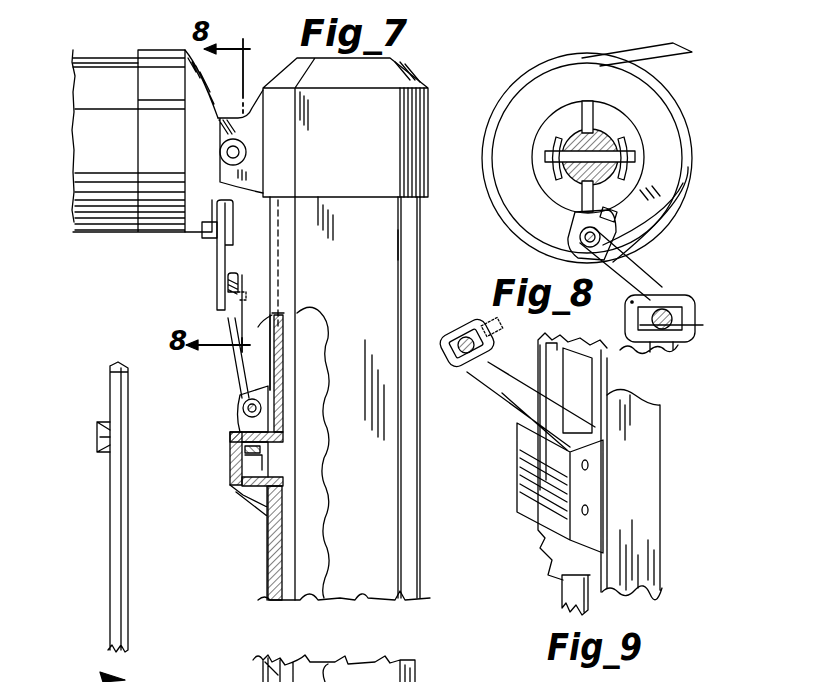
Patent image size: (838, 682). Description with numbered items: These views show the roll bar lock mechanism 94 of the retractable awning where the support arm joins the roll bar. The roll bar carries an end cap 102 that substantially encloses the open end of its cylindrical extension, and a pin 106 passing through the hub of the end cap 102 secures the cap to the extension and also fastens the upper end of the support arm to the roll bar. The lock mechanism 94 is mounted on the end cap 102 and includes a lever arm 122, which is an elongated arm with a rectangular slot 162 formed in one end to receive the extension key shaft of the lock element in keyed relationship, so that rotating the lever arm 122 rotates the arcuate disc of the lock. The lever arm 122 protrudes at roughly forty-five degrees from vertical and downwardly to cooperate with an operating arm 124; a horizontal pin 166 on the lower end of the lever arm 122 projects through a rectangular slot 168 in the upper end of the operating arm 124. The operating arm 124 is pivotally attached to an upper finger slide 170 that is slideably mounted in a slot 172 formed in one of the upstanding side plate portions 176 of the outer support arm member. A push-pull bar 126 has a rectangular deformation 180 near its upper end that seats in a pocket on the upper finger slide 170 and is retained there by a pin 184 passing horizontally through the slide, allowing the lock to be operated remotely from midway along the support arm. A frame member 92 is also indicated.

In FIG. 7, the frame member 92 is at (221, 681).
In FIG. 7, the lock mechanism 94 is at (192, 319).
In FIG. 8, the end cap 102 is at (667, 128).
In FIG. 8, the pin 106 is at (607, 140).
In FIG. 7, the lever arm 122 is at (217, 260).
In FIG. 8, the lever arm 122 is at (640, 268).
In FIG. 7, the operating arm 124 is at (238, 382).
In FIG. 8, the operating arm 124 is at (675, 345).
In FIG. 9, the operating arm 124 is at (520, 403).
In FIG. 7, the push-pull bar 126 is at (112, 388).
In FIG. 9, the push-pull bar 126 is at (563, 597).
In FIG. 8, the rectangular slot 162 is at (688, 167).
In FIG. 7, the horizontal pin 166 is at (240, 297).
In FIG. 8, the horizontal pin 166 is at (703, 320).
In FIG. 9, the horizontal pin 166 is at (498, 350).
In FIG. 8, the rectangular slot 168 is at (677, 318).
In FIG. 9, the rectangular slot 168 is at (462, 314).
In FIG. 7, the upper finger slide 170 is at (232, 468).
In FIG. 9, the upper finger slide 170 is at (532, 490).
In FIG. 7, the slot 172 is at (272, 352).
In FIG. 9, the slot 172 is at (578, 388).
In FIG. 7, the side plate portions 176 is at (390, 246).
In FIG. 9, the side plate portions 176 is at (548, 550).
In FIG. 7, the rectangular deformation 180 is at (100, 443).
In FIG. 7, the pin 184 is at (253, 450).